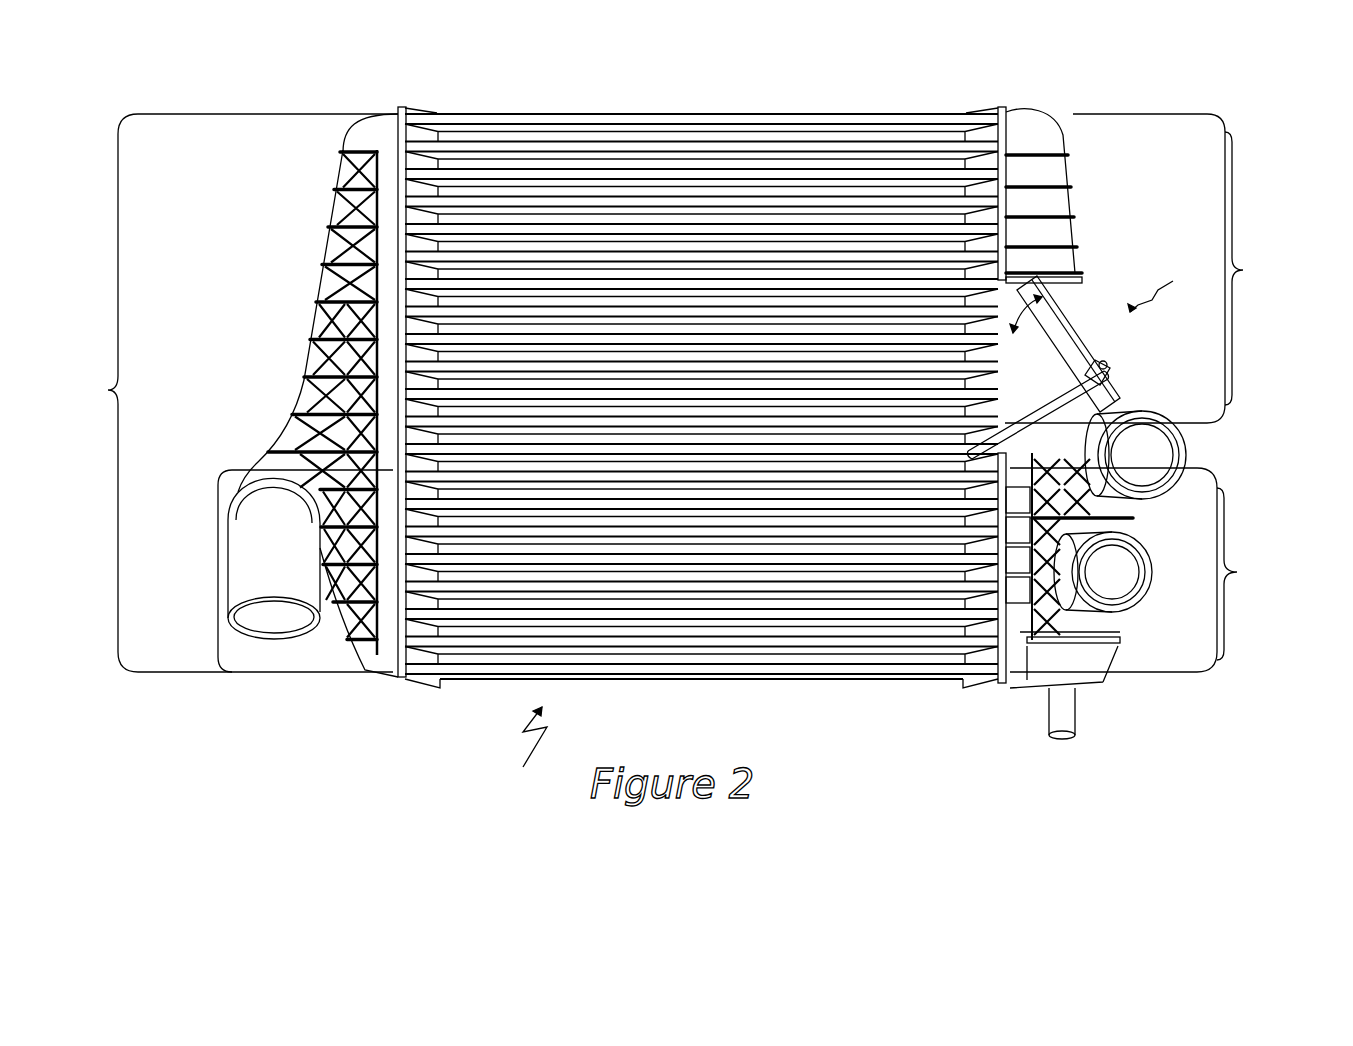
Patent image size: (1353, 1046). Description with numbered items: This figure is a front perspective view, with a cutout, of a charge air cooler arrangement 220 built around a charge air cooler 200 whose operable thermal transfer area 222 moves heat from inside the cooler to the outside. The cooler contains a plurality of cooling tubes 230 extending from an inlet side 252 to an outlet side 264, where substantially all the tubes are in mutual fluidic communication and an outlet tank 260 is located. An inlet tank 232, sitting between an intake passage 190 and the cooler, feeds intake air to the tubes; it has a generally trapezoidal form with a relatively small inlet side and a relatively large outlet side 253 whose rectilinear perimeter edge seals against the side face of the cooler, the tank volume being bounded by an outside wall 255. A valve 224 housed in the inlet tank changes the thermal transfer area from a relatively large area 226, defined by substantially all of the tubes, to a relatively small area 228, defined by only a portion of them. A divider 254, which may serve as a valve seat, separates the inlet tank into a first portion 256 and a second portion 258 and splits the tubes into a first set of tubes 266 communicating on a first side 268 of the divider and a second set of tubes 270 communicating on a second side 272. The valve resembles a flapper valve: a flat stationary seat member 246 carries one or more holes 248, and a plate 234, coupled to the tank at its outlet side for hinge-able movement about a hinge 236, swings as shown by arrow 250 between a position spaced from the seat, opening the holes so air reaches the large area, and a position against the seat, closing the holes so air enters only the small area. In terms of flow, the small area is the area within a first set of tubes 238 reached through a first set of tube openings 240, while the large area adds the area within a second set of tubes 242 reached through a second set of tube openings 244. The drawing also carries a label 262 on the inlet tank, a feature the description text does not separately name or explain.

The intake passage 190 is at (1135, 592).
The charge air cooler 200 is at (910, 112).
The charge air cooler arrangement 220 is at (888, 82).
The operable thermal transfer area 222 is at (523, 750).
The valve 224 is at (1169, 289).
The relatively large area 226 is at (224, 393).
The relatively small area 228 is at (271, 571).
The cooling tubes 230 is at (482, 146).
The inlet tank 232 is at (1057, 700).
The plate 234 is at (1057, 313).
The hinge 236 is at (1088, 345).
The first set of tubes 238 is at (224, 393).
The first set of tube openings 240 is at (1018, 174).
The second set of tubes 242 is at (215, 667).
The second set of tube openings 244 is at (1003, 613).
The seat member 246 is at (1170, 455).
The holes 248 is at (1053, 372).
The arrow 250 is at (1004, 274).
The inlet side 252 is at (1131, 584).
The outlet side 253 is at (989, 110).
The divider 254 is at (1128, 440).
The outside wall 255 is at (1063, 136).
The first portion 256 is at (1167, 570).
The second portion 258 is at (1166, 268).
The outlet tank 260 is at (353, 666).
The second rib 262 is at (1013, 199).
The outlet side 264 is at (387, 250).
The first set of tubes 266 is at (1167, 570).
The first side 268 is at (1103, 661).
The second set of tubes 270 is at (1166, 268).
The second side 272 is at (1056, 233).